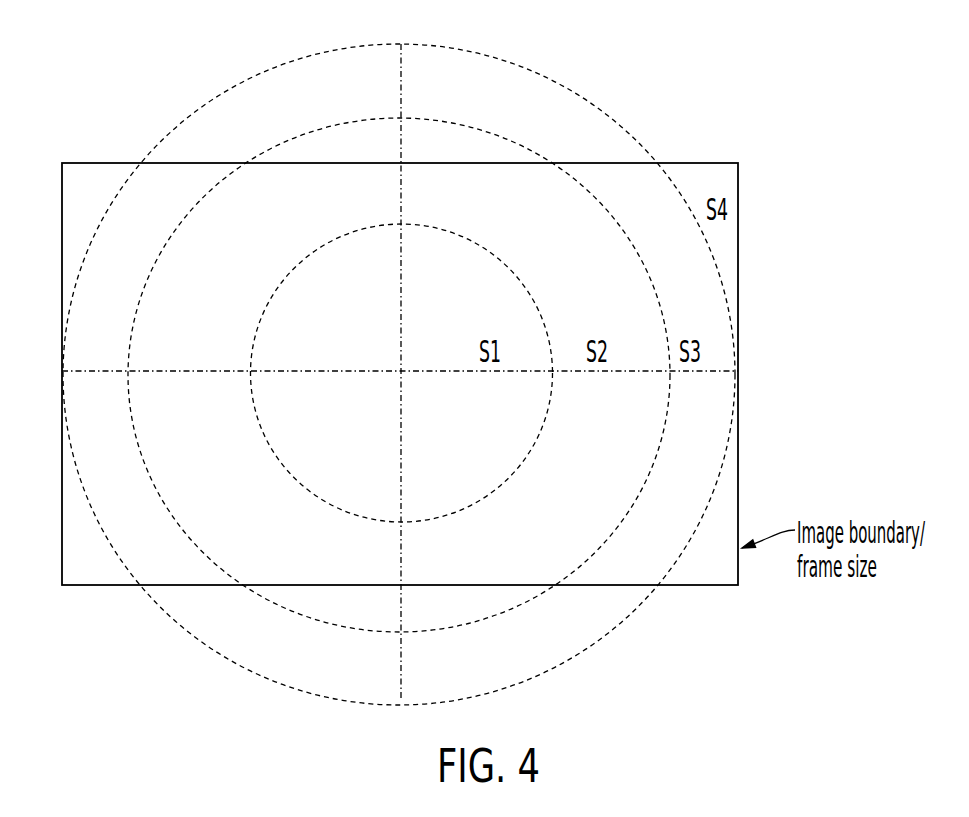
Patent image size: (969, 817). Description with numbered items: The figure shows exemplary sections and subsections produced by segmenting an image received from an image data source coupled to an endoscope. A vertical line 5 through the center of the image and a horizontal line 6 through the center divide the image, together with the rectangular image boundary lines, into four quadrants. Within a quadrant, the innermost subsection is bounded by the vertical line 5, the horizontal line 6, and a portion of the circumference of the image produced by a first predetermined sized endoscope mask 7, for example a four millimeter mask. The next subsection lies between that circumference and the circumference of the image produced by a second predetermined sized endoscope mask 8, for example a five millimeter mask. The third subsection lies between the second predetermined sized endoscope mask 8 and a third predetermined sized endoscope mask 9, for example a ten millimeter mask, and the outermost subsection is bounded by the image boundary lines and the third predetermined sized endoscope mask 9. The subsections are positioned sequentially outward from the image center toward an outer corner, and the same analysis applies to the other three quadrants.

The vertical line 5 is at (406, 60).
The horizontal line 6 is at (740, 371).
The first predetermined sized endoscope mask 7 is at (502, 258).
The second predetermined sized endoscope mask 8 is at (531, 141).
The third predetermined sized endoscope mask 9 is at (628, 120).